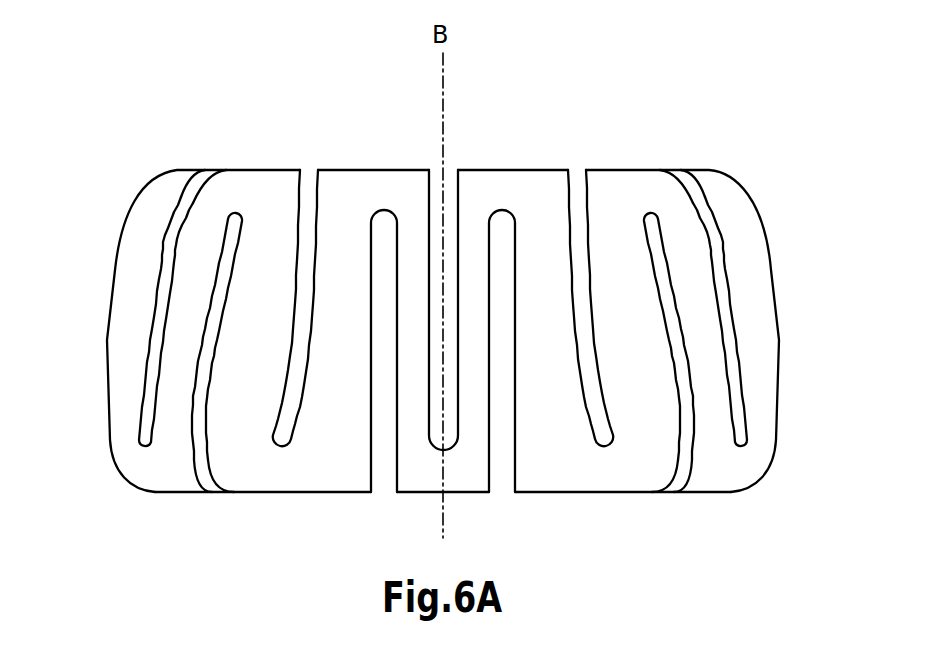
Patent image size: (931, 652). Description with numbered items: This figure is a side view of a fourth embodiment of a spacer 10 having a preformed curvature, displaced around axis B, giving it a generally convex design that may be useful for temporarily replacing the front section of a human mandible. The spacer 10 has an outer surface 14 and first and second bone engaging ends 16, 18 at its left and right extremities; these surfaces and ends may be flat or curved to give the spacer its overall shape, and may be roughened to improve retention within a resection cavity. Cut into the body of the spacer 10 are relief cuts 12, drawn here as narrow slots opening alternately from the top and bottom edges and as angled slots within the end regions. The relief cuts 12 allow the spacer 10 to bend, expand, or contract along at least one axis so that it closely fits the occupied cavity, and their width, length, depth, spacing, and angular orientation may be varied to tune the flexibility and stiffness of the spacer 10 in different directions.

The spacer 10 is at (755, 100).
The relief cuts 12 is at (382, 454).
The outer surface 14 is at (505, 180).
The first bone engaging end 16 is at (108, 310).
The second bone engaging end 18 is at (777, 333).